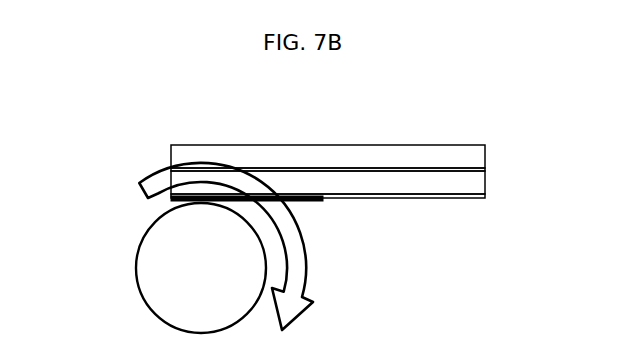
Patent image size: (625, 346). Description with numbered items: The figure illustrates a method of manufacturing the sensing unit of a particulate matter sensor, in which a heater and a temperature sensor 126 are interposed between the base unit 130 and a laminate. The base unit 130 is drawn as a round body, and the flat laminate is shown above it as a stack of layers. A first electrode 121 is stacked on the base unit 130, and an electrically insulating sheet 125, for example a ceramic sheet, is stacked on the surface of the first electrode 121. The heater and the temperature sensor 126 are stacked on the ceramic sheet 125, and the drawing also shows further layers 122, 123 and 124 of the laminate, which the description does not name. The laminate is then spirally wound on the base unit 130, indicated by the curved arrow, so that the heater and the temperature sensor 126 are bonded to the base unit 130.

The first electrode 121 is at (472, 197).
The second layer 122 is at (472, 183).
The adhesive layer 123 is at (480, 162).
The cover layer 124 is at (453, 152).
The electrically insulating sheet 125 is at (148, 197).
The heater and temperature sensor 126 is at (160, 205).
The base unit 130 is at (160, 277).